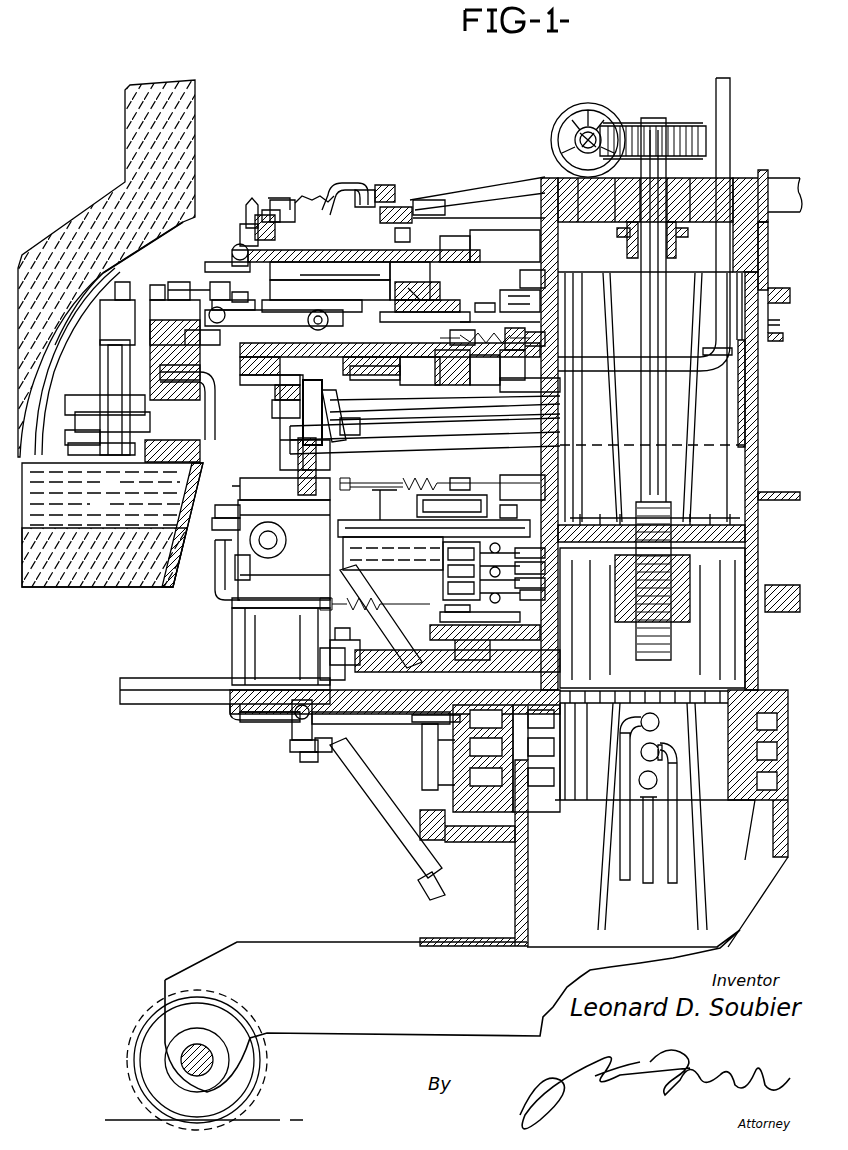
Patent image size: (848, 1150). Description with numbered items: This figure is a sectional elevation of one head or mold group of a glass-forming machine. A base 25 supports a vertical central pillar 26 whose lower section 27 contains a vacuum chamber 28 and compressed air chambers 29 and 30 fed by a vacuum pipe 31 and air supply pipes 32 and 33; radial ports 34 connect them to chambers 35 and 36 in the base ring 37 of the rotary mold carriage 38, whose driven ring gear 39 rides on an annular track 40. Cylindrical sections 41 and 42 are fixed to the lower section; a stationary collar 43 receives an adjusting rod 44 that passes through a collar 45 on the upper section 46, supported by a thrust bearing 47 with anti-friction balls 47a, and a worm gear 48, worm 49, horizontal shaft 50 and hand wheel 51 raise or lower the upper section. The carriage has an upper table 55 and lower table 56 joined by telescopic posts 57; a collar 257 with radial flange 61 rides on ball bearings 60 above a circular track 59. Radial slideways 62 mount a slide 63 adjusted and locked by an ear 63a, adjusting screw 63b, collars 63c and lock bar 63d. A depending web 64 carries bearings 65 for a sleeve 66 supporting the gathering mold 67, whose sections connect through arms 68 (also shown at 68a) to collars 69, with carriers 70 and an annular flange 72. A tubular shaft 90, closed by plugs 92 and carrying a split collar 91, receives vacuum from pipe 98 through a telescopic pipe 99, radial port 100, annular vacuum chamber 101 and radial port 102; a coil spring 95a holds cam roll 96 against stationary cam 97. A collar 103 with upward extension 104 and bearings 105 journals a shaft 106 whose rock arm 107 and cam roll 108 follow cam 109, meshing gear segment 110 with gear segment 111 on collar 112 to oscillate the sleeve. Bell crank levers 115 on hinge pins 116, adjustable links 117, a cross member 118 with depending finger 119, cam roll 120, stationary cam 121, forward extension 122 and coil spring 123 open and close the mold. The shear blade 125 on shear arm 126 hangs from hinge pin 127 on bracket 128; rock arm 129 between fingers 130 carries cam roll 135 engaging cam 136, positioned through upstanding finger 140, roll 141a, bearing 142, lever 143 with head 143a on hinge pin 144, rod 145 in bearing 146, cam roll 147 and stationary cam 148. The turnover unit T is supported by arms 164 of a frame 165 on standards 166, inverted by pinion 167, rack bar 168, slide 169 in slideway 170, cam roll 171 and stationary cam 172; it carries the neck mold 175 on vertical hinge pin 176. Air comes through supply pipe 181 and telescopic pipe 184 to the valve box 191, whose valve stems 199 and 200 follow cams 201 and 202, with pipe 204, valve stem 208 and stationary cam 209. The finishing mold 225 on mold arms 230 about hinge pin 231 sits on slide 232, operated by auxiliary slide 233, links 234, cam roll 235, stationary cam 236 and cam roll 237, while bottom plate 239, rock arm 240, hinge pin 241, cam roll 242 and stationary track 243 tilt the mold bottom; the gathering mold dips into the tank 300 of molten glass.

The base 25 is at (318, 946).
The central pillar 26 is at (760, 578).
The lower section 27 is at (515, 880).
The vacuum chamber 28 is at (541, 777).
The compressed air chamber 29 is at (541, 747).
The compressed air chamber 30 is at (536, 758).
The vacuum pipe 31 is at (646, 885).
The air supply pipe 32 is at (672, 885).
The air supply pipe 33 is at (620, 885).
The radial ports 34 is at (540, 830).
The vacuum chamber 35 is at (486, 777).
The compressed air chamber 36 is at (486, 719).
The base ring 37 is at (455, 798).
The mold carriage 38 is at (409, 738).
The driven ring gear 39 is at (420, 825).
The annular track 40 is at (452, 842).
The cylindrical section 41 is at (764, 540).
The cylindrical section 42 is at (758, 464).
The stationary collar 43 is at (690, 620).
The adjusting rod 44 is at (666, 392).
The collar 45 is at (688, 200).
The upper section 46 is at (762, 178).
The thrust bearing 47 is at (680, 240).
The anti-friction balls 47a is at (624, 245).
The worm gear 48 is at (655, 122).
The worm 49 is at (578, 135).
The horizontal shaft 50 is at (580, 140).
The hand wheel 51 is at (575, 104).
The upper table 55 is at (485, 300).
The lower table 56 is at (378, 714).
The telescopic posts 57 is at (280, 444).
The circular track 59 is at (485, 323).
The ball bearings 60 is at (506, 290).
The radial flange 61 is at (528, 273).
The radial slideways 62 is at (462, 240).
The slide 63 is at (340, 252).
The upstanding ear 63a is at (325, 200).
The adjusting screw 63b is at (262, 214).
The spaced collars 63c is at (255, 218).
The lock bar 63d is at (248, 200).
The depending web 64 is at (233, 276).
The bearings 65 is at (255, 385).
The sleeve 66 is at (345, 366).
The gathering mold 67 is at (78, 448).
The arms 68 is at (188, 408).
The fitting 68a is at (180, 383).
The collars 69 is at (173, 360).
The carriers 70 is at (66, 433).
The annular flange 72 is at (80, 405).
The tubular shaft 90 is at (495, 328).
The split collar 91 is at (81, 363).
The plugs 92 is at (75, 361).
The coil spring 95a is at (490, 428).
The cam roll 96 is at (503, 369).
The stationary cam 97 is at (525, 330).
The pipe 98 is at (730, 108).
The telescopic pipe 99 is at (452, 385).
The radial port 100 is at (420, 385).
The annular vacuum chamber 101 is at (520, 392).
The radial port 102 is at (560, 372).
The collar 103 is at (425, 311).
The upward extension 104 is at (430, 284).
The bearings 105 is at (395, 262).
The shaft 106 is at (415, 233).
The rock arm 107 is at (383, 214).
The cam roll 108 is at (415, 200).
The stationary cam 109 is at (420, 197).
The gear segment 110 is at (330, 270).
The gear segment 111 is at (330, 288).
The collar 112 is at (430, 301).
The bell crank levers 115 is at (274, 316).
The hinge pins 116 is at (312, 310).
The adjustable links 117 is at (150, 318).
The cross member 118 is at (300, 412).
The depending finger 119 is at (340, 400).
The cam roll 120 is at (330, 416).
The stationary cam 121 is at (360, 428).
The forward extension 122 is at (278, 398).
The coil spring 123 is at (280, 416).
The shear blade 125 is at (174, 451).
The shear arm 126 is at (111, 421).
The hinge pin 127 is at (129, 322).
The bracket 128 is at (70, 285).
The rock arm 129 is at (103, 273).
The fingers 130 is at (100, 378).
The cam roll 135 is at (122, 284).
The cam 136 is at (158, 285).
The upstanding finger 140 is at (181, 281).
The roll 141a is at (230, 300).
The guide or bearing 142 is at (215, 282).
The lever 143 is at (232, 253).
The head 143a is at (232, 292).
The hinge pin 144 is at (240, 232).
The rod 145 is at (272, 200).
The bearing 146 is at (298, 198).
The cam roll 147 is at (365, 188).
The stationary cam 148 is at (384, 184).
The arms 164 is at (318, 530).
The frame 165 is at (393, 553).
The standards 166 is at (395, 612).
The pinion 167 is at (224, 523).
The rack bar 168 is at (225, 510).
The slide 169 is at (481, 565).
The slideway 170 is at (434, 513).
The cam roll 171 is at (512, 498).
The stationary cam 172 is at (478, 486).
The neck mold 175 is at (250, 478).
The vertical hinge pin 176 is at (318, 460).
The supply pipe 181 is at (215, 585).
The telescopic pipe 184 is at (255, 722).
The valve box 191 is at (440, 475).
The valve stem 199 is at (452, 506).
The valve stem 200 is at (548, 598).
The vacuum control cam 201 is at (545, 553).
The compressed air control cam 202 is at (545, 585).
The pipe 204 is at (420, 740).
The valve stem 208 is at (432, 603).
The stationary cam 209 is at (545, 570).
The finishing mold 225 is at (232, 604).
The mold arms 230 is at (232, 652).
The vertical hinge pin 231 is at (326, 648).
The slide 232 is at (381, 723).
The auxiliary slide 233 is at (456, 652).
The links 234 is at (345, 632).
The cam roll 235 is at (457, 613).
The stationary cam 236 is at (480, 624).
The cam roll 237 is at (485, 640).
The bottom plate 239 is at (228, 706).
The rock arm 240 is at (292, 730).
The hinge pin 241 is at (292, 750).
The cam roll 242 is at (305, 762).
The stationary track 243 is at (330, 752).
The collar or ring 257 is at (505, 246).
The tank 300 is at (60, 590).
The turnover unit T is at (232, 585).